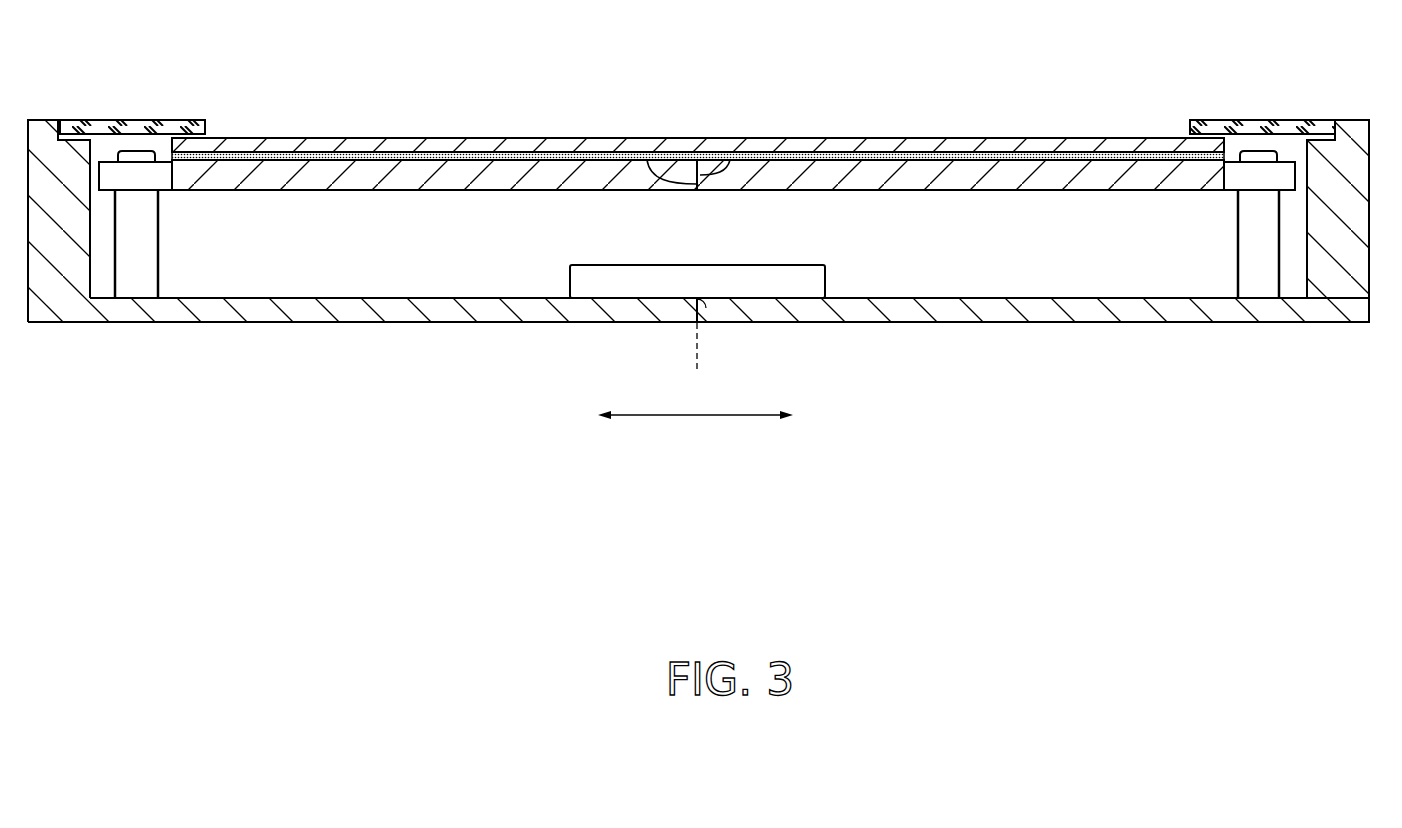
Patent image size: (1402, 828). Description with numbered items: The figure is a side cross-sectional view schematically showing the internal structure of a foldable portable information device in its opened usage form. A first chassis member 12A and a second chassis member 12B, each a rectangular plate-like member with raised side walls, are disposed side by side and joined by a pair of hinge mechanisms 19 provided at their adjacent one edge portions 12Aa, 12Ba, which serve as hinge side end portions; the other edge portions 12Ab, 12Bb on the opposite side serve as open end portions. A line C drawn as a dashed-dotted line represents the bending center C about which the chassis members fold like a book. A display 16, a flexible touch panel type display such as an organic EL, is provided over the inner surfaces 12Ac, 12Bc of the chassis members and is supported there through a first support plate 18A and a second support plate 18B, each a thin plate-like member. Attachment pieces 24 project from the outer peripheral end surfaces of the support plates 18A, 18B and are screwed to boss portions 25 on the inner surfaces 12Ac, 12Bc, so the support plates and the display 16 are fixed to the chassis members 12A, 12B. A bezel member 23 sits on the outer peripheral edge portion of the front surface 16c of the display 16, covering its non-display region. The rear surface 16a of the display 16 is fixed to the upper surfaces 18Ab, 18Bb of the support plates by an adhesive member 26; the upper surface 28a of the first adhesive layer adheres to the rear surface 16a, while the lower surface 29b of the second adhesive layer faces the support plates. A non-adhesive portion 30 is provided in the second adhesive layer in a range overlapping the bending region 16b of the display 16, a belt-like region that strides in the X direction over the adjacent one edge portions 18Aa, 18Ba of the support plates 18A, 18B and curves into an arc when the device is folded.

The first chassis member 12A is at (497, 327).
The second chassis member 12B is at (898, 327).
The other edge portion 12Ab is at (26, 290).
The other edge portion 12Bb is at (1373, 292).
The inner surface 12Ac is at (266, 300).
The inner surface 12Bc is at (1115, 300).
The one edge portion 12Aa is at (707, 313).
The one edge portion 12Ba is at (687, 313).
The bezel member 23 is at (96, 112).
The attachment piece 24 is at (135, 176).
The boss portion 25 is at (125, 272).
The hinge mechanism 19 is at (783, 287).
The first support plate 18A is at (373, 200).
The second support plate 18B is at (1000, 200).
The upper surface 18Ab is at (253, 162).
The upper surface 18Bb is at (1097, 160).
The one edge portion 18Aa is at (730, 162).
The one edge portion 18Ba is at (650, 162).
The display 16 is at (933, 125).
The rear surface 16a is at (872, 158).
The front surface 16c is at (342, 137).
The bending region 16b is at (697, 220).
The non-adhesive portion 30 is at (570, 193).
The adhesive member 26 is at (535, 160).
The upper surface 28a is at (464, 152).
The lower surface 29b is at (480, 188).
The bending center C is at (696, 362).
The X direction X is at (695, 429).